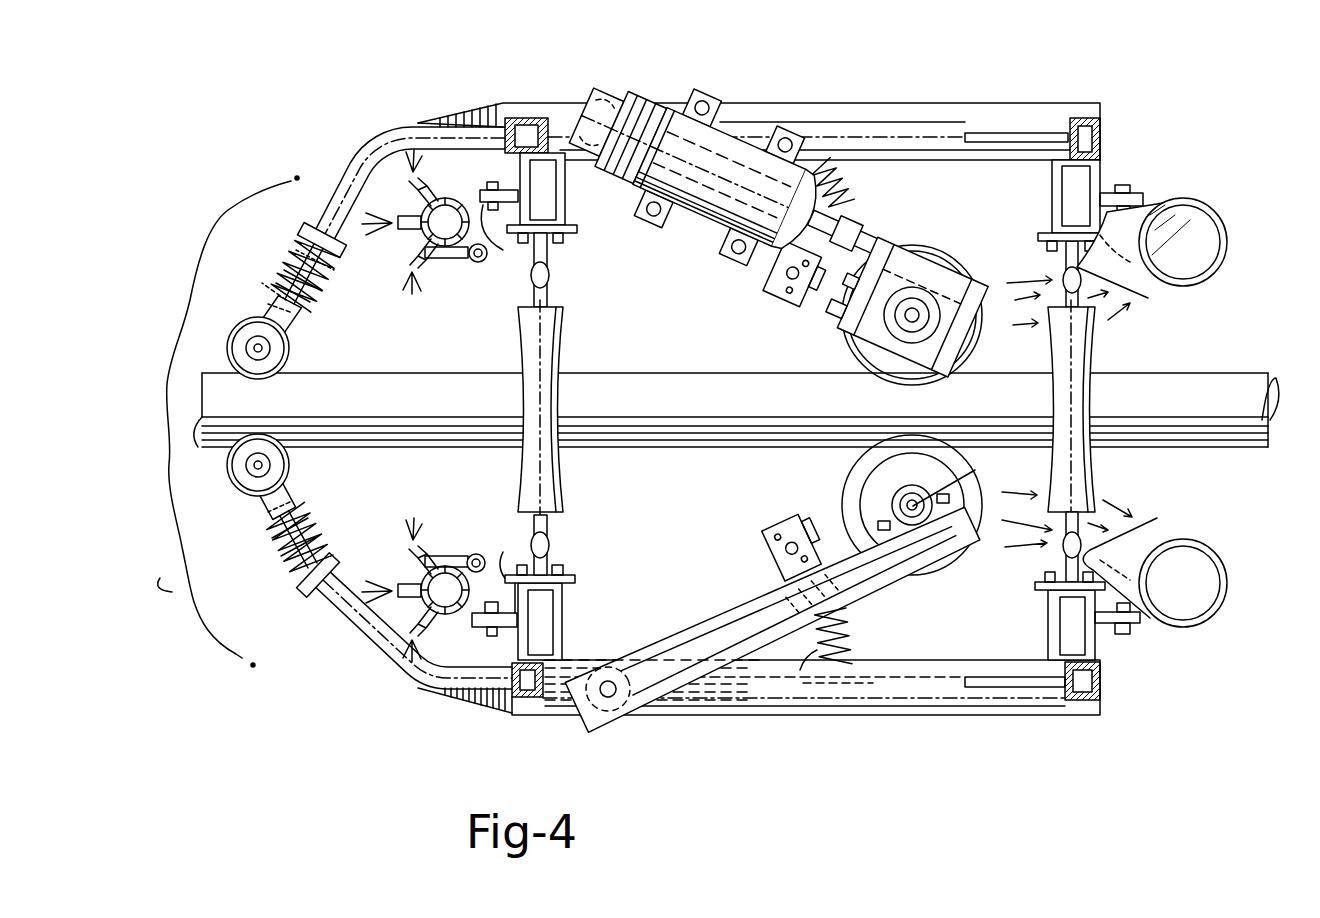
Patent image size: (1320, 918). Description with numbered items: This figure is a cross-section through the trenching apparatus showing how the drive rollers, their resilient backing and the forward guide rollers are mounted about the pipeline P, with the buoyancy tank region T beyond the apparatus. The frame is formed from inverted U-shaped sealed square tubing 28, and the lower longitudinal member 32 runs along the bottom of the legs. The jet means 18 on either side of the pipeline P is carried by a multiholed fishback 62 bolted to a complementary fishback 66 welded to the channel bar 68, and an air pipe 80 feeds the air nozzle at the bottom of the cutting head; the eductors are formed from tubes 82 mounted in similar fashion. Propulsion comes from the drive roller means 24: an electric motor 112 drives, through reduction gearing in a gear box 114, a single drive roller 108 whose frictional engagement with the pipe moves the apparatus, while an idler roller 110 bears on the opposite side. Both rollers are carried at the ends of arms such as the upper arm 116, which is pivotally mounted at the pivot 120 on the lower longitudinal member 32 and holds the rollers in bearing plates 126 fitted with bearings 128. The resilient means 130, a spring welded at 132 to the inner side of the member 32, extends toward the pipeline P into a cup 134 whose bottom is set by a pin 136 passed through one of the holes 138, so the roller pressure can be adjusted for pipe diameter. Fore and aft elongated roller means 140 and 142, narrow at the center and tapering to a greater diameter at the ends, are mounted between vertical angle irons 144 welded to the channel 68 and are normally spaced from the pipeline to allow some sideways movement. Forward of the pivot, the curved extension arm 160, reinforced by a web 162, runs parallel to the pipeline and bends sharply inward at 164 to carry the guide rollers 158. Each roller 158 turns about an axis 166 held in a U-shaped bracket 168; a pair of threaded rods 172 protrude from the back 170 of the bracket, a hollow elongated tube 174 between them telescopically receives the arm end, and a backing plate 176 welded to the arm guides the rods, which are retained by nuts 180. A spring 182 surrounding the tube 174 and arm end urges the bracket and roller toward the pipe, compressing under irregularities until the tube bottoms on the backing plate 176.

The jet means 18 is at (450, 198).
The drive roller means 24 is at (911, 175).
The inverted U-shaped sealed square tubing 28 is at (518, 718).
The lower longitudinal member 32 is at (938, 110).
The fishback 62 is at (480, 256).
The complementary frame fishback 66 is at (520, 170).
The channel bar 68 is at (1052, 180).
The air pipe 80 is at (478, 267).
The tubes 82 is at (1213, 280).
The drive roller 108 is at (987, 332).
The idler roller 110 is at (855, 470).
The electric motor 112 is at (708, 222).
The gear box 114 is at (930, 252).
The upper arm 116 is at (858, 228).
The pivot 120 is at (610, 697).
The bearing plates 126 is at (975, 470).
The bearings 128 is at (900, 500).
The resilient means 130 is at (848, 630).
The weld 132 is at (813, 674).
The cup 134 is at (793, 302).
The pin 136 is at (812, 528).
The holes 138 is at (775, 287).
The fore elongated roller means 140 is at (565, 323).
The aft elongated roller means 142 is at (1097, 337).
The angle irons 144 is at (505, 575).
The rollers 158 is at (288, 350).
The curved extension arm 160 is at (377, 678).
The web 162 is at (467, 712).
The bend 164 is at (385, 652).
The axis 166 is at (255, 467).
The U-shaped bracket 168 is at (265, 320).
The back 170 is at (300, 495).
The threaded rods 172 is at (285, 260).
The hollow elongated tube 174 is at (313, 280).
The backing plate 176 is at (345, 257).
The nuts 180 is at (303, 595).
The spring 182 is at (268, 276).
The pipeline P is at (647, 443).
The tank T is at (228, 421).